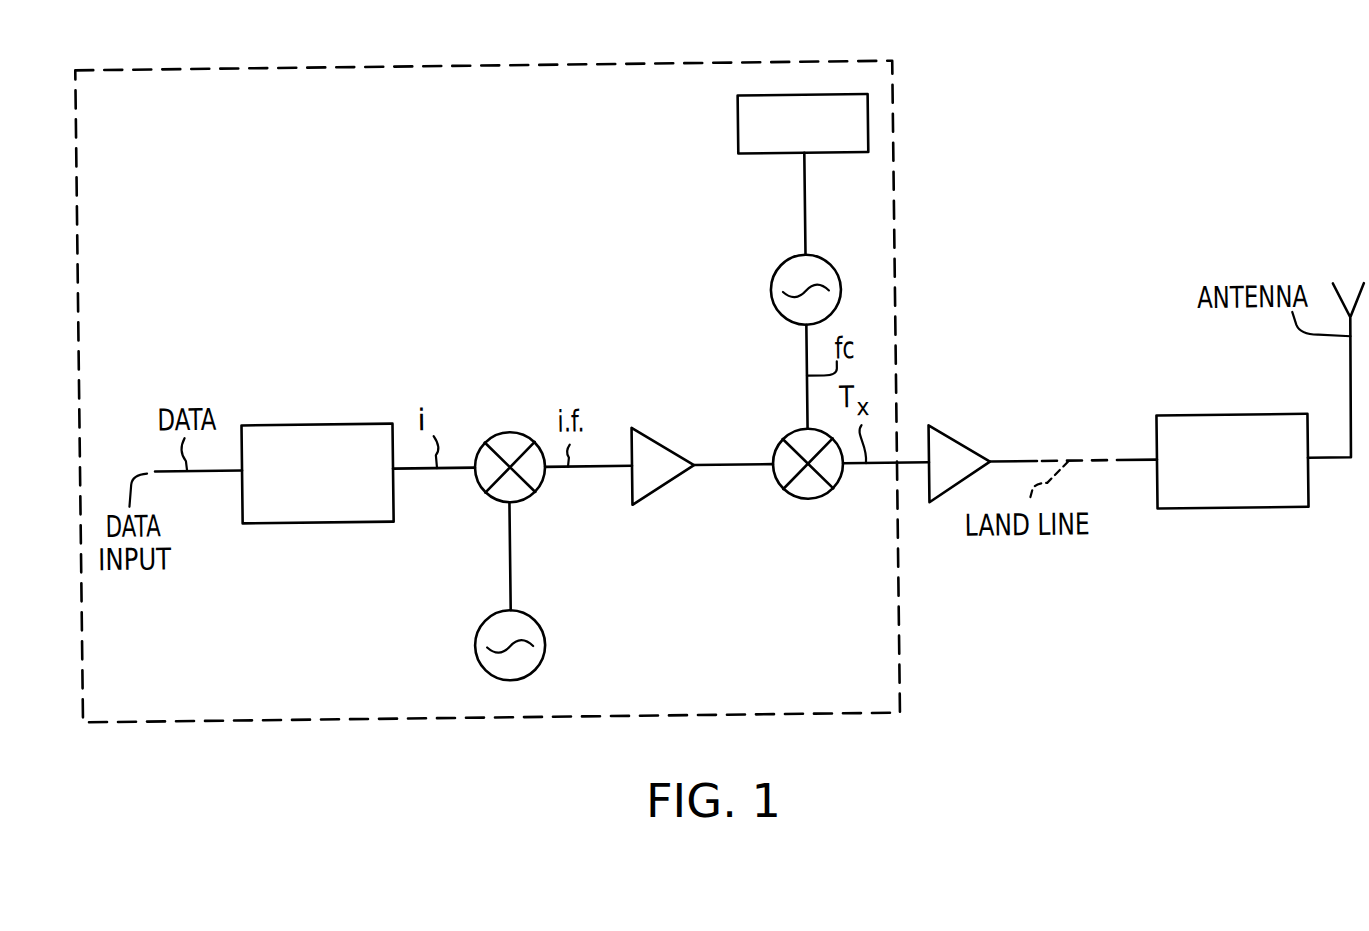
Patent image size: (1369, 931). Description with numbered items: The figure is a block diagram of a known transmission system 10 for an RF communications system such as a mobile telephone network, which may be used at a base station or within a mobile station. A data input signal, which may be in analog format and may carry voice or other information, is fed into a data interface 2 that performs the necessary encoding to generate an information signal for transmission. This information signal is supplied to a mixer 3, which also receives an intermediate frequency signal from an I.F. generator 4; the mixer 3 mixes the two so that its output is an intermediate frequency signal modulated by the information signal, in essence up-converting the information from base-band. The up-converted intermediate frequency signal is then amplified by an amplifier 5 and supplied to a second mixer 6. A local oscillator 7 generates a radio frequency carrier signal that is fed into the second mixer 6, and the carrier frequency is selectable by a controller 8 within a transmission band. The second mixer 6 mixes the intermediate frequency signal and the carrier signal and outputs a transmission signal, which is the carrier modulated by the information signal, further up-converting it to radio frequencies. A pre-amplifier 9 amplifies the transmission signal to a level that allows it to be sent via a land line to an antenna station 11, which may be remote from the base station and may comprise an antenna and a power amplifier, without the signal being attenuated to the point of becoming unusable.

The data interface 2 is at (355, 420).
The mixer 3 is at (499, 431).
The I.F. generator 4 is at (543, 630).
The amplifier 5 is at (672, 446).
The second mixer 6 is at (823, 499).
The local oscillator 7 is at (831, 262).
The controller 8 is at (742, 123).
The pre-amplifier 9 is at (958, 444).
The transmission system 10 is at (901, 127).
The antenna station 11 is at (1223, 514).